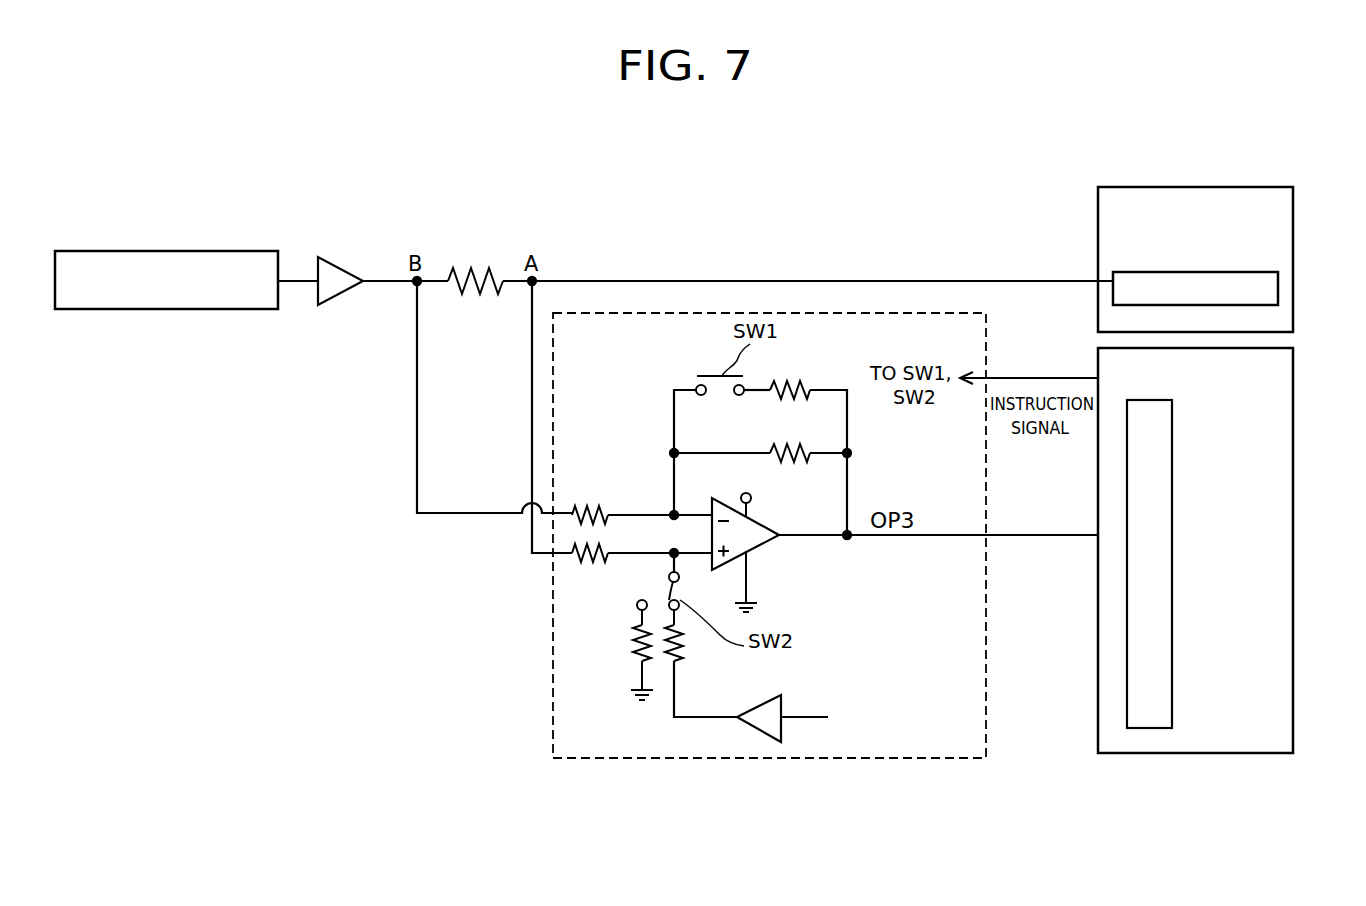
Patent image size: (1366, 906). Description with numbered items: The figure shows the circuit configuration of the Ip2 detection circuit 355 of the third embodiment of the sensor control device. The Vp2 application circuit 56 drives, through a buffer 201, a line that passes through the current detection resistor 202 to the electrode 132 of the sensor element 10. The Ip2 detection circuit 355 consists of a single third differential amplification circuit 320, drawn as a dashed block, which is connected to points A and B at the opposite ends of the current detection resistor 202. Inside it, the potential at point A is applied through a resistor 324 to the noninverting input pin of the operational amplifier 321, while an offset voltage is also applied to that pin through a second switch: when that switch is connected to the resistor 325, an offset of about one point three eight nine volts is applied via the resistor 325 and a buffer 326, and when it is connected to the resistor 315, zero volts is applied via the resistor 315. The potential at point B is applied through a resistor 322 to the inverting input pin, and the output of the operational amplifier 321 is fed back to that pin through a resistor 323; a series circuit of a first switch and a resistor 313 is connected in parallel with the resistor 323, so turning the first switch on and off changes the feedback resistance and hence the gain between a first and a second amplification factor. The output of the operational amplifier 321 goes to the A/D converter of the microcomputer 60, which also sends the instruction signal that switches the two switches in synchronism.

The Vp2 application circuit 56 is at (240, 251).
The buffer 201 is at (340, 262).
The current detection resistor 202 is at (494, 268).
The Ip2 detection circuit 355 is at (621, 247).
The third differential amplification circuit 320 is at (987, 342).
The resistor 322 is at (587, 506).
The resistor 324 is at (587, 562).
The resistor 313 is at (819, 378).
The resistor 323 is at (819, 441).
The operational amplifier 321 is at (766, 526).
The resistor 315 is at (636, 650).
The resistor 325 is at (676, 662).
The buffer 326 is at (781, 703).
The sensor element 10 is at (1258, 187).
The electrode 132 is at (1278, 291).
The microcomputer 60 is at (1293, 522).